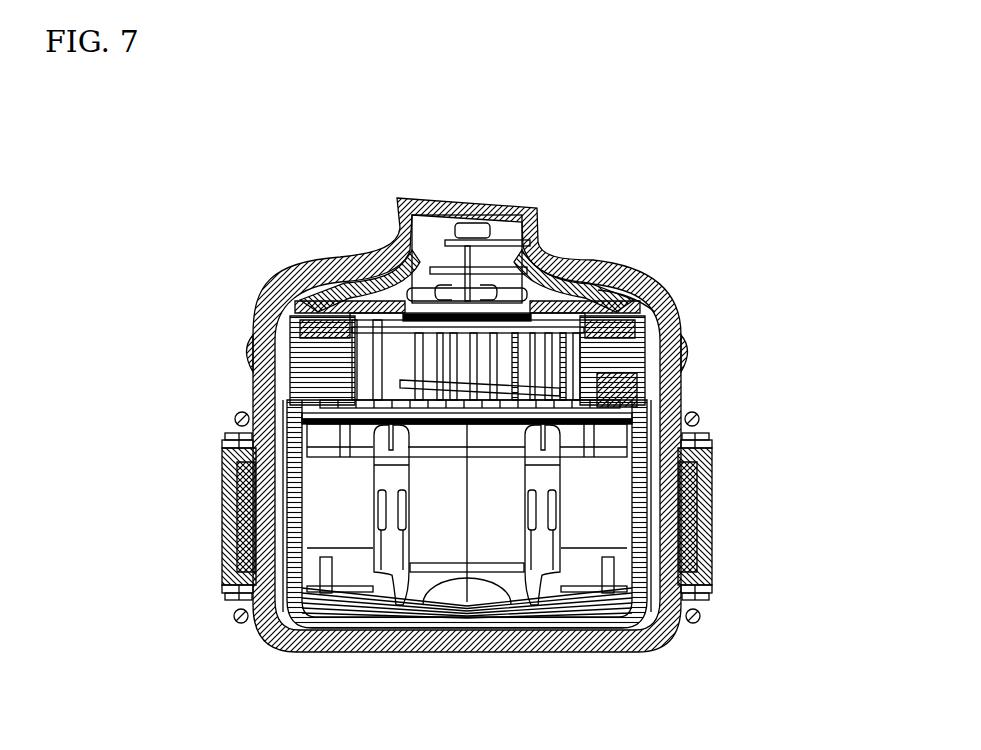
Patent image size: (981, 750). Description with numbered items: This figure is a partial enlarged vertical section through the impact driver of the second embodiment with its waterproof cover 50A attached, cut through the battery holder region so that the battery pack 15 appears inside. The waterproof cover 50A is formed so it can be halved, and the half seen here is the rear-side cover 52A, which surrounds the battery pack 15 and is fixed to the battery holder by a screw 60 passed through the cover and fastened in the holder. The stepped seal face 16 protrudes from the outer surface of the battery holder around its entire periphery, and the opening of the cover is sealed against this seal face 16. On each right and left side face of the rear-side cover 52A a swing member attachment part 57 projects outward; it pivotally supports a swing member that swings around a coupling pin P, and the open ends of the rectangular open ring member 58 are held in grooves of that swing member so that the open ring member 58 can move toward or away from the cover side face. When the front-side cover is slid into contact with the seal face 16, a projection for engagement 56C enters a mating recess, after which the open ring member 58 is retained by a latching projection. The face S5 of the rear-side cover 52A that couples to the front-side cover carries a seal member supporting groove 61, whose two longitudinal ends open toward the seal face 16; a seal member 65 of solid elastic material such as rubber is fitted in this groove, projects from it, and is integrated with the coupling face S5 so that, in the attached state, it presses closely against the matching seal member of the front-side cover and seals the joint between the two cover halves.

The rear-side cover 52A is at (652, 258).
The waterproof cover 50A is at (533, 419).
The seal face 16 is at (344, 255).
The coupling face S5 is at (656, 292).
The screw 60 is at (245, 347).
The coupling pin P is at (240, 429).
The swing member attachment part 57 is at (222, 491).
The projection for engagement 56C is at (235, 532).
The open ring member 58 is at (235, 619).
The seal member supporting groove 61 is at (360, 657).
The battery pack 15 is at (447, 535).
The seal member 65 is at (565, 657).